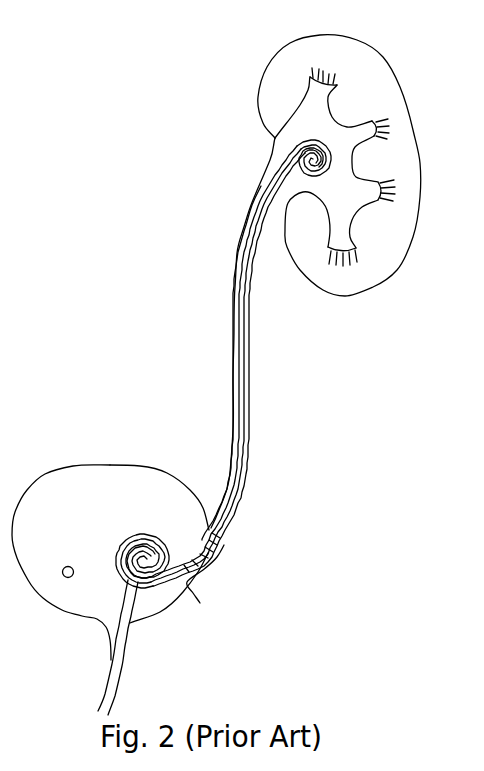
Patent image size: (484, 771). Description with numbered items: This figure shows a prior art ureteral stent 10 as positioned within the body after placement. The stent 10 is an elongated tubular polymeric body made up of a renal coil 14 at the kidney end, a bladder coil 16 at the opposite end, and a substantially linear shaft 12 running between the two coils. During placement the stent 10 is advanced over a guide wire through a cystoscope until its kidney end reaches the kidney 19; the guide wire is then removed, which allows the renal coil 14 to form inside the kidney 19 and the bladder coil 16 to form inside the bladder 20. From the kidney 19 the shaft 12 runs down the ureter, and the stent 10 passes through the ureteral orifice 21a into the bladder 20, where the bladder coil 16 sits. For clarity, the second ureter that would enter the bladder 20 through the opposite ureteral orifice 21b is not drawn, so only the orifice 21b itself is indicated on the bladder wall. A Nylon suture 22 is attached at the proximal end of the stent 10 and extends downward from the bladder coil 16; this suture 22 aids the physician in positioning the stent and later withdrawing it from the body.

The stent 10 is at (217, 357).
The shaft 12 is at (256, 437).
The renal coil 14 is at (327, 142).
The bladder coil 16 is at (118, 544).
The kidney 19 is at (402, 273).
The bladder 20 is at (65, 466).
The ureteral orifice 21a is at (199, 603).
The opposite ureteral orifice 21b is at (65, 578).
The Nylon suture 22 is at (139, 624).